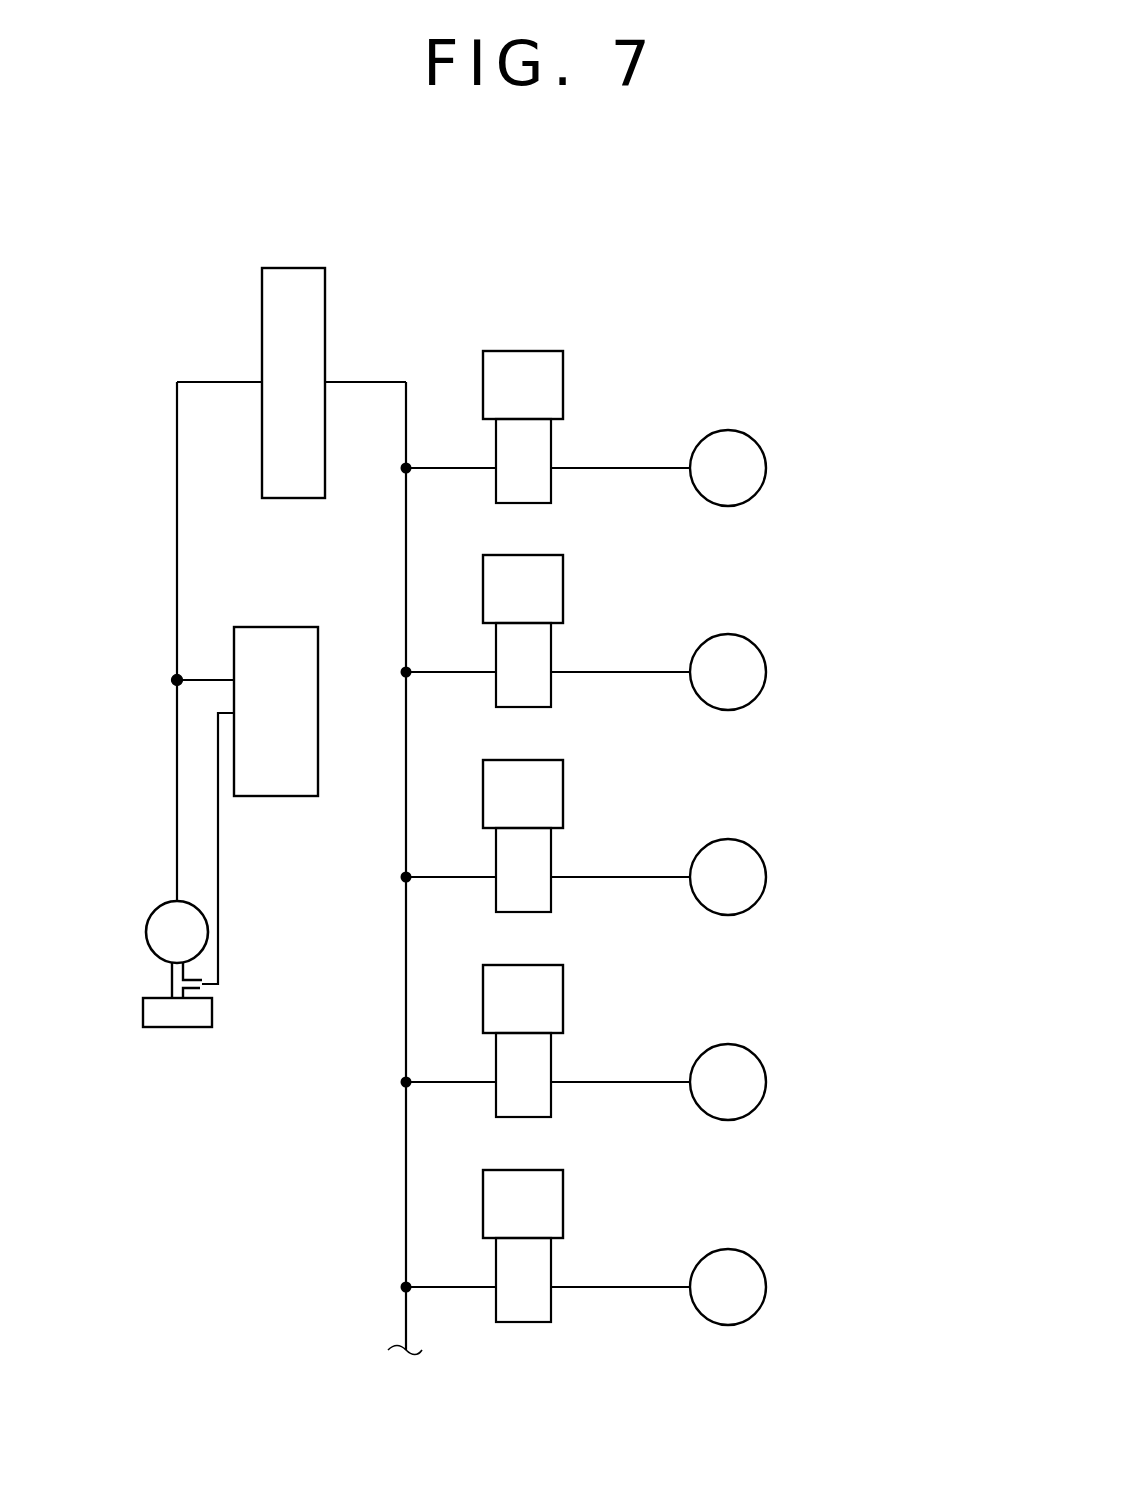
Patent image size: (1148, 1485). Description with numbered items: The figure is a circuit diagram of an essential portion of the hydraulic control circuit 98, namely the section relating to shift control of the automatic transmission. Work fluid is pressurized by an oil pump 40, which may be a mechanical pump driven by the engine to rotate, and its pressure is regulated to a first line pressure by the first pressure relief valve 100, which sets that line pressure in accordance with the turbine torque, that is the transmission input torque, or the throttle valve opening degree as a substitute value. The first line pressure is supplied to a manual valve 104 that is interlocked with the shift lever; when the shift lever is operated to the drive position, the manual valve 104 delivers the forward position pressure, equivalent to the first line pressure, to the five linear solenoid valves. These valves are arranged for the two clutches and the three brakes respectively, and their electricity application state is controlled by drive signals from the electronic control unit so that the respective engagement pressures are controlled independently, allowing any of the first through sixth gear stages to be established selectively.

The hydraulic control circuit 98 is at (803, 283).
The manual valve 104 is at (290, 268).
The first pressure relief valve 100 is at (278, 645).
The oil pump 40 is at (153, 912).